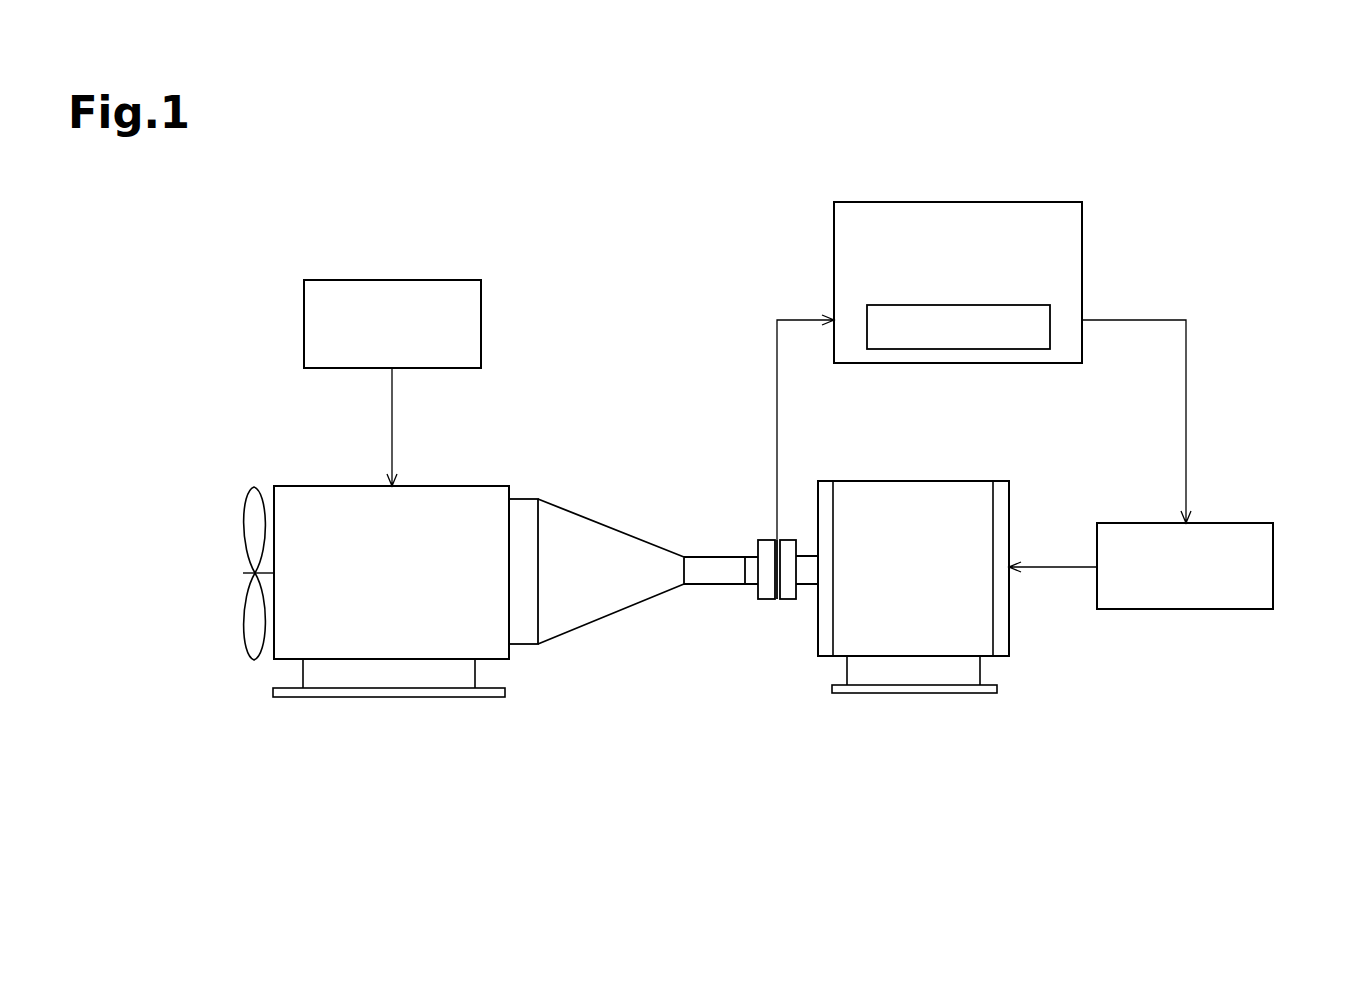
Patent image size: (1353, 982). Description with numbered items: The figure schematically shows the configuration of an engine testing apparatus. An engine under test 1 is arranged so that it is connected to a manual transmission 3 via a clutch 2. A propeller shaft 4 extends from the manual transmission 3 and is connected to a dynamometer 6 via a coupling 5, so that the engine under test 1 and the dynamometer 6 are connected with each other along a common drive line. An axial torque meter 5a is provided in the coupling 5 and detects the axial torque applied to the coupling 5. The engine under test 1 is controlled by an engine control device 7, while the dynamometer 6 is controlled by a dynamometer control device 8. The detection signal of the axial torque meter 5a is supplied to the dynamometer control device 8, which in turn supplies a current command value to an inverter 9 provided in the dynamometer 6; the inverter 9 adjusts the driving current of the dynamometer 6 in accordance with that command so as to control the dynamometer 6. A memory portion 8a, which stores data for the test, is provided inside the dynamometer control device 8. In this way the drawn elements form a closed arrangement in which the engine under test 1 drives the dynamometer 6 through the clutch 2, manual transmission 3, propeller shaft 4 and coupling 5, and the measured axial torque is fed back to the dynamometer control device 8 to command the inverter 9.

The engine under test 1 is at (290, 486).
The clutch 2 is at (527, 498).
The manual transmission 3 is at (612, 522).
The propeller shaft 4 is at (714, 586).
The coupling 5 is at (764, 600).
The axial torque meter 5a is at (780, 600).
The dynamometer 6 is at (922, 481).
The engine control device 7 is at (395, 280).
The dynamometer control device 8 is at (958, 202).
The memory portion 8a is at (1004, 350).
The inverter 9 is at (1230, 523).